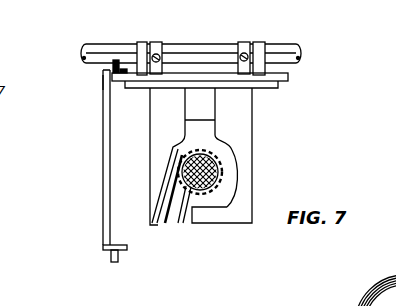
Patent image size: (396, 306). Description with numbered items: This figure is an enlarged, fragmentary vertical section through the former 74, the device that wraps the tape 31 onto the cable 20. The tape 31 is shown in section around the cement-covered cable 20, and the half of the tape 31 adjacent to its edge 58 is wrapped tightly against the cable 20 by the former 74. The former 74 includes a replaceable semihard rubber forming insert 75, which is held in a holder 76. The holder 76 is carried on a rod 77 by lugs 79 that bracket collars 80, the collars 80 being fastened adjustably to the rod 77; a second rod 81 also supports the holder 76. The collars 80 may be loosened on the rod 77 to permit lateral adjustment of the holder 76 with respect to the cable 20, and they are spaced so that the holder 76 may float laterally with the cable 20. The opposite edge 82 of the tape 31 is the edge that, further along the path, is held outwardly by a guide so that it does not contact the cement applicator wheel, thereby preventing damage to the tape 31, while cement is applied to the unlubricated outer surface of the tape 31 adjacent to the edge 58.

The cable 20 is at (222, 171).
The tape 31 is at (184, 173).
The edge 58 is at (185, 226).
The former 74 is at (98, 80).
The forming insert 75 is at (205, 121).
The holder 76 is at (253, 103).
The rod 77 is at (83, 65).
The lugs 79 is at (140, 42).
The collars 80 is at (237, 42).
The rod 81 is at (103, 146).
The edge 82 is at (167, 226).